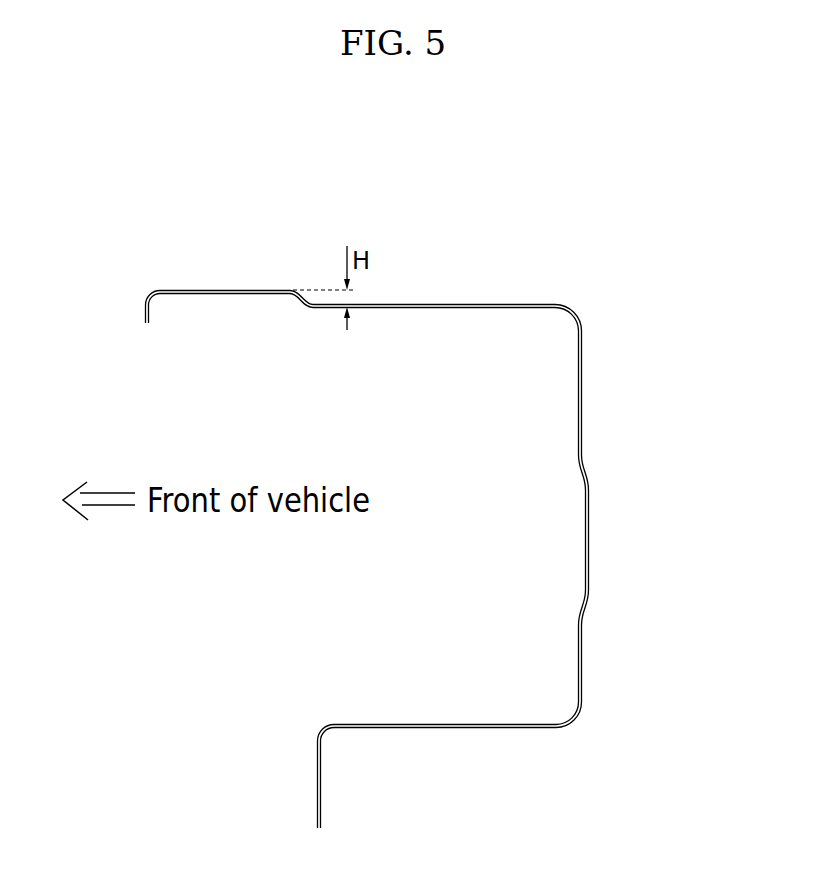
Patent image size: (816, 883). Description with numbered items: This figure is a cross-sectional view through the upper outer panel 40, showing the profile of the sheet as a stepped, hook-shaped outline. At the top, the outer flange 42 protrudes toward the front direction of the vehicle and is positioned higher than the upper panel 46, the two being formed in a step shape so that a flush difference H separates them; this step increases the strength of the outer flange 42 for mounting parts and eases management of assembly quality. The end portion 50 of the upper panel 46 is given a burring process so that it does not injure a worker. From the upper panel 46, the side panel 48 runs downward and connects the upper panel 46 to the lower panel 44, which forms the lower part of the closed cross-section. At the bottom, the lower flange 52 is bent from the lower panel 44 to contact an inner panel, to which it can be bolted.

The upper outer panel 40 is at (378, 528).
The outer flange 42 is at (222, 290).
The lower panel 44 is at (455, 729).
The upper panel 46 is at (461, 304).
The side panel 48 is at (588, 557).
The end portion 50 is at (145, 318).
The lower flange 52 is at (321, 795).